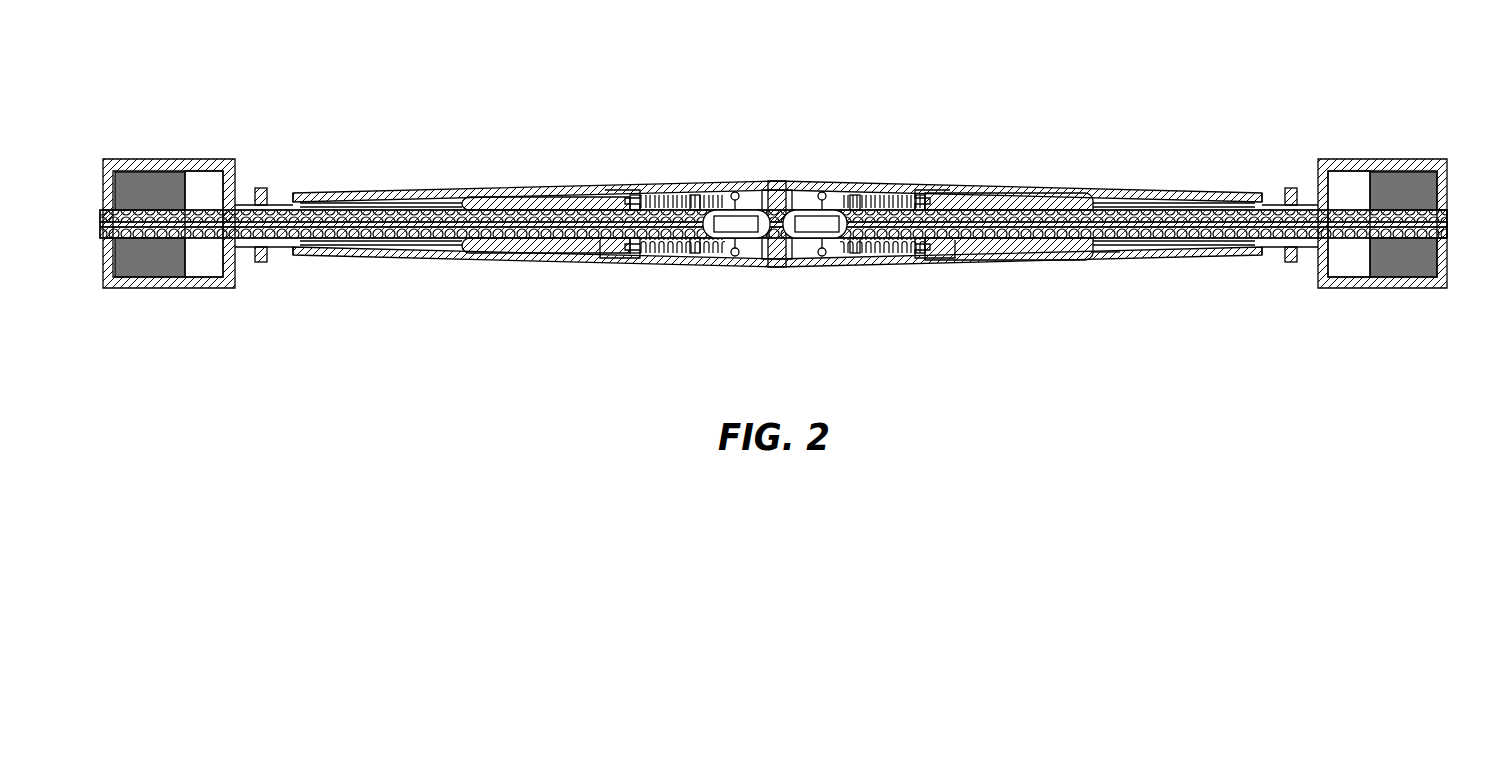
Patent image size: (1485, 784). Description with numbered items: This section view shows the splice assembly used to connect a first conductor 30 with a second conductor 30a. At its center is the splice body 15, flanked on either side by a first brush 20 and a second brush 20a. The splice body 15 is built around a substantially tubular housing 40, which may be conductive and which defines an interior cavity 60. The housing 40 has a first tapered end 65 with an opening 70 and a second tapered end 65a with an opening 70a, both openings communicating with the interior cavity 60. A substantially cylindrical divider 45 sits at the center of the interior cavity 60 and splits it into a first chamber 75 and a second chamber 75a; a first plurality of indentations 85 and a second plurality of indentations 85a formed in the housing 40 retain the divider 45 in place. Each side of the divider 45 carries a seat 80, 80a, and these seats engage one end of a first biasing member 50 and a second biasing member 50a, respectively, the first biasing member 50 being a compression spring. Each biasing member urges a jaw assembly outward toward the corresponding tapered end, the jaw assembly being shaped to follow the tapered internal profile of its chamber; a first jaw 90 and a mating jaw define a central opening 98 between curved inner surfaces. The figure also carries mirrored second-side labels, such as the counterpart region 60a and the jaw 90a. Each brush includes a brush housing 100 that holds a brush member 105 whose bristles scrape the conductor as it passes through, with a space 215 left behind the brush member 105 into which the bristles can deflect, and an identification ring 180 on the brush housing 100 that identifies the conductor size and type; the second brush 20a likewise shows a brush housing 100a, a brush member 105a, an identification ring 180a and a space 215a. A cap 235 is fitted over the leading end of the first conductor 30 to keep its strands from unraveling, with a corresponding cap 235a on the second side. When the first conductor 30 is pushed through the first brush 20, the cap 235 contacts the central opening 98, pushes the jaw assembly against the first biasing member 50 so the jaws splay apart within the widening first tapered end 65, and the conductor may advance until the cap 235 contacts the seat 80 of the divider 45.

The splice body 15 is at (952, 48).
The first brush 20 is at (1358, 213).
The second brush 20a is at (200, 204).
The first conductor 30 is at (1458, 215).
The second conductor 30a is at (96, 226).
The housing 40 is at (865, 183).
The divider 45 is at (776, 185).
The first biasing member 50 is at (895, 190).
The second biasing member 50a is at (657, 187).
The interior cavity 60 is at (1103, 192).
The carrier 60a is at (443, 240).
The first tapered end 65 is at (1190, 255).
The second tapered end 65a is at (366, 257).
The opening 70 is at (1270, 192).
The opening 70a is at (290, 193).
The first chamber 75 is at (915, 265).
The second chamber 75a is at (637, 265).
The seat 80 is at (786, 268).
The seat 80a is at (752, 185).
The first plurality of indentations 85 is at (822, 190).
The second plurality of indentations 85a is at (743, 270).
The first jaw 90 is at (1008, 192).
The spring 90a is at (548, 205).
The central opening 98 is at (1112, 262).
The brush housing 100 is at (1372, 160).
The end housing 100a is at (165, 160).
The brush member 105 is at (1403, 168).
The end spring 105a is at (148, 192).
The identification ring 180 is at (1296, 262).
The collar 180a is at (262, 263).
The space 215 is at (1352, 257).
The cavity 215a is at (200, 257).
The cap 235 is at (835, 265).
The washer 235a is at (718, 265).